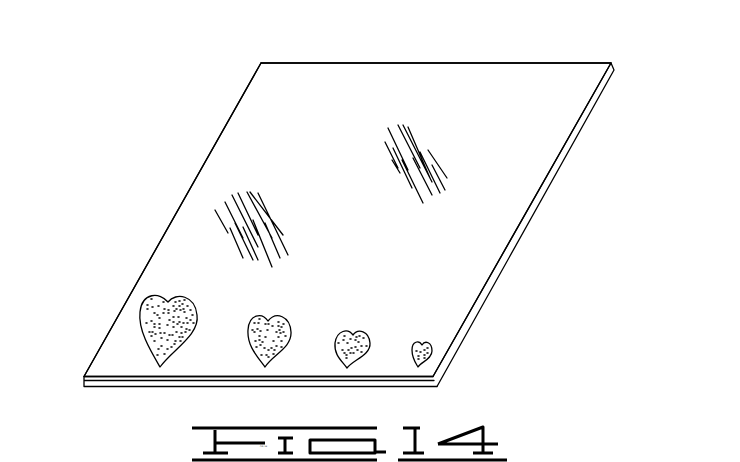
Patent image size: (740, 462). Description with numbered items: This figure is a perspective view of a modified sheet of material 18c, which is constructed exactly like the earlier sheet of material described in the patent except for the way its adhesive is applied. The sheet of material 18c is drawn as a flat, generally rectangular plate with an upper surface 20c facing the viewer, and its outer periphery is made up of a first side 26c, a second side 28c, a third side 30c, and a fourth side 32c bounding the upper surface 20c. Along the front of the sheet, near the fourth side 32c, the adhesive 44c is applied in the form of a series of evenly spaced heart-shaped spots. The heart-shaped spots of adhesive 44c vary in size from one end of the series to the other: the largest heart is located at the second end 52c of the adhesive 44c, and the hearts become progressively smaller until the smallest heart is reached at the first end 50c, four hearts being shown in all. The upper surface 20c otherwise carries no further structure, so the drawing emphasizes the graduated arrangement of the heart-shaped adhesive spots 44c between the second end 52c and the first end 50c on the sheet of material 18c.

The modified sheet of material 18c is at (339, 216).
The upper surface 20c is at (540, 80).
The third side 30c is at (447, 63).
The second side 28c is at (207, 160).
The first side 26c is at (555, 180).
The fourth side 32c is at (420, 382).
The second end 52c is at (132, 322).
The adhesive 44c is at (345, 365).
The first end 50c is at (440, 352).